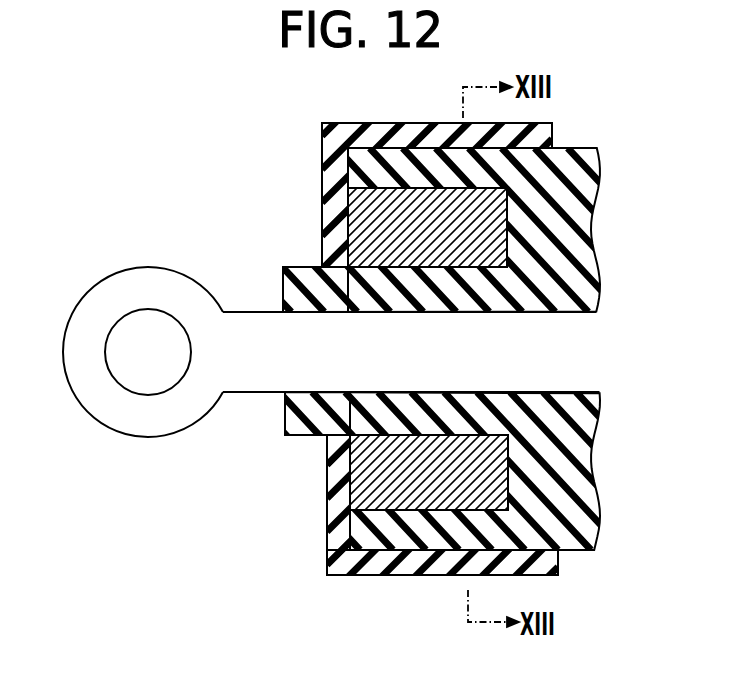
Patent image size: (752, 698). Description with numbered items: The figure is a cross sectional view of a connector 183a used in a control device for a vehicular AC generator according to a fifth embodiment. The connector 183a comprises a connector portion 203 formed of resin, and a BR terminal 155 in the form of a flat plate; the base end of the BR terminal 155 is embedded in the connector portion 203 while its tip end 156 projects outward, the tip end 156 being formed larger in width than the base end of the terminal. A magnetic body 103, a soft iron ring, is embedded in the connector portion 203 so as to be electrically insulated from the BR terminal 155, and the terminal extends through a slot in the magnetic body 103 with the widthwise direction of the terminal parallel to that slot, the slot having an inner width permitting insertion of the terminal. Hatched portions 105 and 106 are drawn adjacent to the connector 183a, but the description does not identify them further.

The tip end 156 is at (128, 292).
The BR terminal BR is at (235, 335).
The BR terminal 155 is at (264, 302).
The lower flange 105 is at (310, 437).
The magnetic body 103 is at (447, 485).
The connector portion 203 is at (577, 552).
The connector 183a is at (318, 525).
The casing bottom plate 106 is at (382, 563).